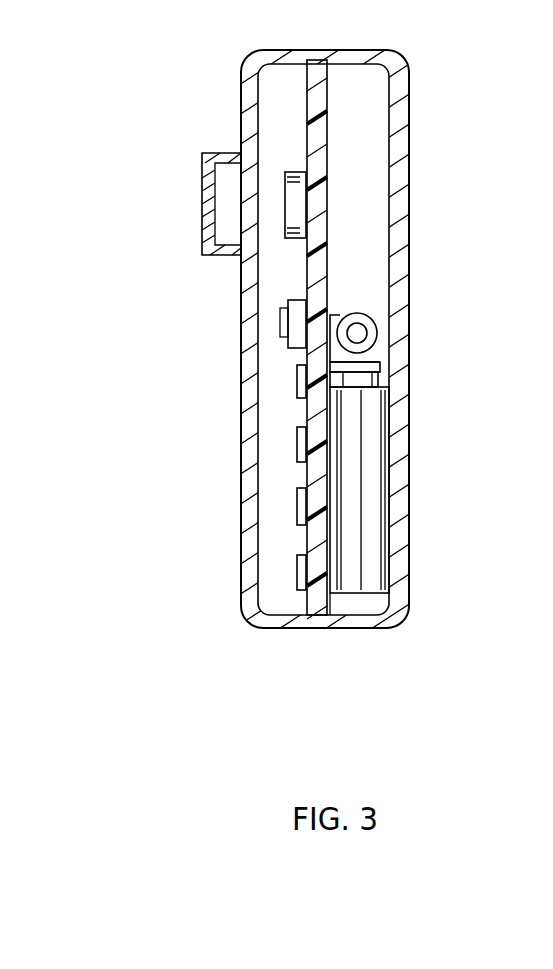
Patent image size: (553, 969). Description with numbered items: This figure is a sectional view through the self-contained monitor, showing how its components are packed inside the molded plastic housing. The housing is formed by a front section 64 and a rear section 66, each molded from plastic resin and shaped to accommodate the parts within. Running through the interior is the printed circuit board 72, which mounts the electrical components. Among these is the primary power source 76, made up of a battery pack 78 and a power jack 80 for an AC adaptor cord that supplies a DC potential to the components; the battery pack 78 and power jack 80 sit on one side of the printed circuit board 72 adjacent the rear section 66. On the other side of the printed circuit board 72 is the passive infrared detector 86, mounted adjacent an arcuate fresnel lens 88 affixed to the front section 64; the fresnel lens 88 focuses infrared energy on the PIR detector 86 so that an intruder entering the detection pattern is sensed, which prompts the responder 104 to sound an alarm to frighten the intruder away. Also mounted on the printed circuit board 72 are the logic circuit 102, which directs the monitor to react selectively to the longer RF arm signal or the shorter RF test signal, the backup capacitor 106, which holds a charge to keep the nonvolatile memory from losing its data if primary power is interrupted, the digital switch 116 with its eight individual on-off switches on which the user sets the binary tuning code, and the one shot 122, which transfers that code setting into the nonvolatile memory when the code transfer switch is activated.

The front section 64 is at (241, 80).
The rear section 66 is at (409, 103).
The printed circuit board 72 is at (327, 212).
The primary power source 76 is at (380, 364).
The battery pack 78 is at (372, 503).
The power jack 80 is at (377, 318).
The PIR detector 86 is at (298, 172).
The fresnel lens 88 is at (202, 208).
The logic circuit 102 is at (297, 447).
The responder 104 is at (297, 508).
The backup capacitor 106 is at (297, 577).
The digital switch 116 is at (280, 326).
The one shot 122 is at (297, 379).